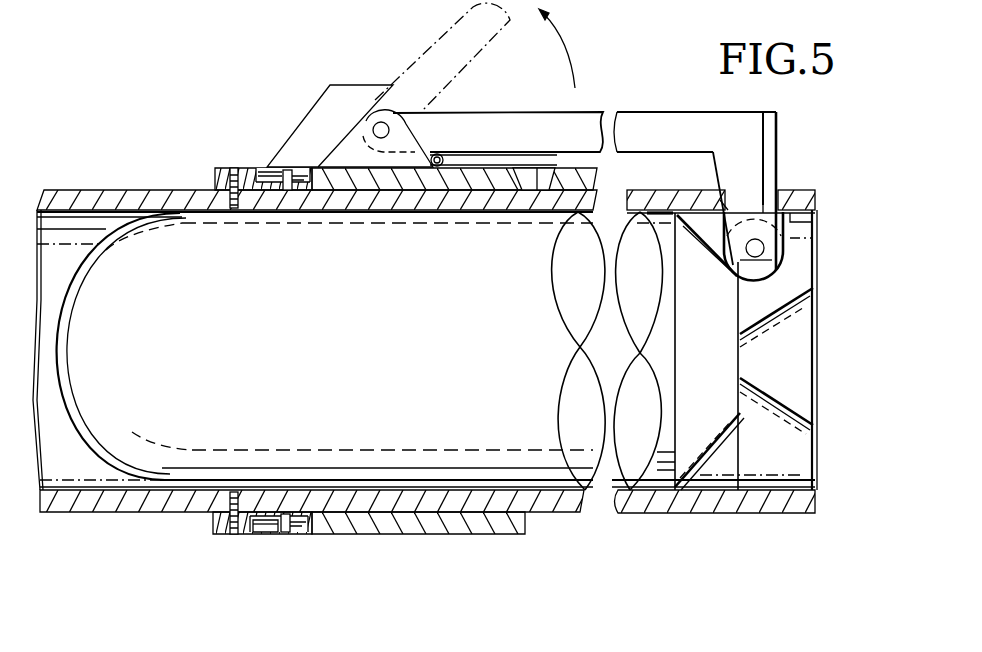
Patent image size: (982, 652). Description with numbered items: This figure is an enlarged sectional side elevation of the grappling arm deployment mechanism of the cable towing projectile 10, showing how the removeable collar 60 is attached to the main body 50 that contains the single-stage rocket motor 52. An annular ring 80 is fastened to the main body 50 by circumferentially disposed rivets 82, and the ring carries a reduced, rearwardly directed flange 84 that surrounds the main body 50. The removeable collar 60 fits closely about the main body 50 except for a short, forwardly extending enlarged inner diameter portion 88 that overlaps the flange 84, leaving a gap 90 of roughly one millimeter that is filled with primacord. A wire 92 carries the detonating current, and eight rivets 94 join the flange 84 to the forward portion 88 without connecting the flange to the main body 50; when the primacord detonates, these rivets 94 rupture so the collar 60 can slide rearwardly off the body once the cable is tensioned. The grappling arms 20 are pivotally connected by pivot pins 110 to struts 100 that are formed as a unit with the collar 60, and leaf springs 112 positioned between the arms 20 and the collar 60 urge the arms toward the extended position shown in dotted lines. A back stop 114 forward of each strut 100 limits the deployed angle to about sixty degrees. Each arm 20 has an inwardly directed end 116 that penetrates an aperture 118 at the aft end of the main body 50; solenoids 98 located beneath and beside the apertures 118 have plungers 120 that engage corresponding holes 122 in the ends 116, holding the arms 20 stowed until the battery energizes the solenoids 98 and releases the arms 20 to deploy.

The projectile 10 is at (110, 101).
The grappling arms 20 is at (465, 77).
The main body 50 is at (92, 513).
The rocket motor 52 is at (741, 421).
The removeable collar 60 is at (482, 535).
The annular ring 80 is at (213, 534).
The rivets 82 is at (230, 168).
The flange 84 is at (273, 512).
The forwardly extending enlarged inner diameter portion 88 is at (267, 536).
The gap 90 is at (303, 534).
The wire 92 is at (267, 170).
The rivets 94 is at (288, 190).
The solenoids 98 is at (765, 247).
The struts 100 is at (392, 163).
The pivot pins 110 is at (380, 140).
The leaf springs 112 is at (536, 192).
The back stop 114 is at (345, 85).
The inwardly directed ends 116 is at (758, 193).
The apertures 118 is at (780, 200).
The plungers 120 is at (782, 264).
The holes 122 is at (813, 221).